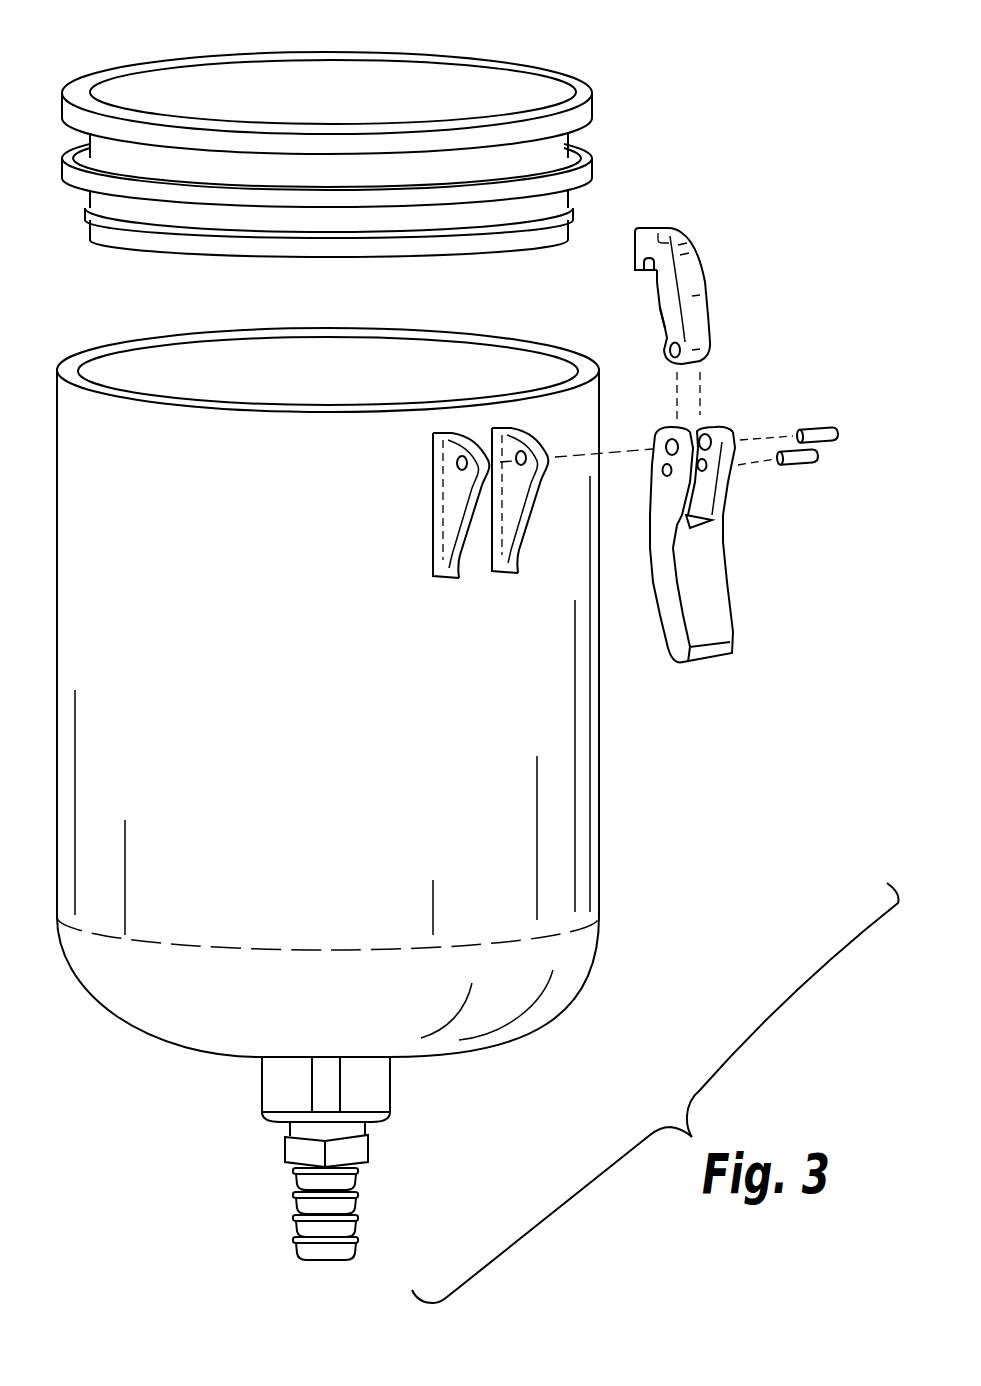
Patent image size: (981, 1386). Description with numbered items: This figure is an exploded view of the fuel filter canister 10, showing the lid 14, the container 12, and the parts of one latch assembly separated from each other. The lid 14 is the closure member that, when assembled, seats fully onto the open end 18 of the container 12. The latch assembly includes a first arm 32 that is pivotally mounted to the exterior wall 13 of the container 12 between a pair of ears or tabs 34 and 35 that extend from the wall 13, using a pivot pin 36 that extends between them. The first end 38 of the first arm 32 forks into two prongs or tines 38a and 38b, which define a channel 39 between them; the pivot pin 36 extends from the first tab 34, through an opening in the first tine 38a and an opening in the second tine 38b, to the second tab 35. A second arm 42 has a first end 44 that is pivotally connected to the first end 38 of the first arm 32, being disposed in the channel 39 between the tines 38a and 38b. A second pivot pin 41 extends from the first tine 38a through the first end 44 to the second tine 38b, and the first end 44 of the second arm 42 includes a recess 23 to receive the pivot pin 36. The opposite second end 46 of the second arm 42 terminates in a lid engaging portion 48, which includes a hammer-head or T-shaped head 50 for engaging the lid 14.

The fuel filter canister 10 is at (795, 180).
The container 12 is at (508, 776).
The wall 13 is at (599, 703).
The lid 14 is at (330, 92).
The open end 18 is at (143, 372).
The recess 23 is at (664, 327).
The first arm 32 is at (698, 572).
The first tab 34 is at (453, 500).
The second tab 35 is at (510, 499).
The pivot pin 36 is at (822, 430).
The first end 38 is at (667, 487).
The first tine 38a is at (665, 437).
The second tine 38b is at (733, 426).
The channel 39 is at (709, 417).
The second pivot pin 41 is at (797, 462).
The second arm 42 is at (660, 292).
The first end 44 is at (668, 352).
The second end 46 is at (633, 248).
The lid engaging portion 48 is at (660, 228).
The T-shaped head 50 is at (635, 250).